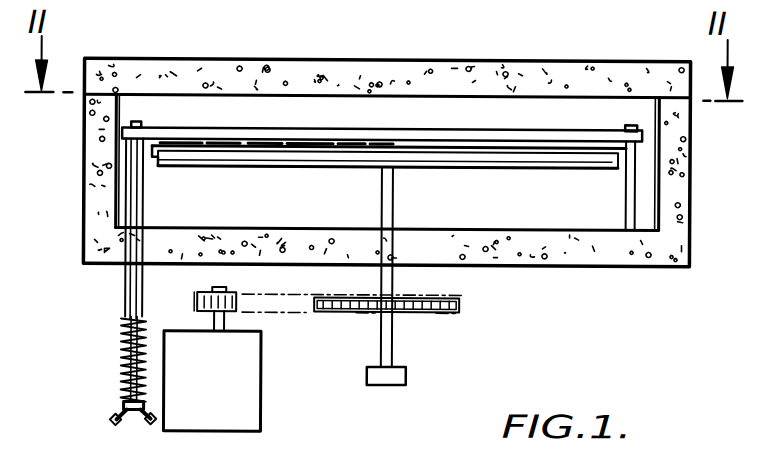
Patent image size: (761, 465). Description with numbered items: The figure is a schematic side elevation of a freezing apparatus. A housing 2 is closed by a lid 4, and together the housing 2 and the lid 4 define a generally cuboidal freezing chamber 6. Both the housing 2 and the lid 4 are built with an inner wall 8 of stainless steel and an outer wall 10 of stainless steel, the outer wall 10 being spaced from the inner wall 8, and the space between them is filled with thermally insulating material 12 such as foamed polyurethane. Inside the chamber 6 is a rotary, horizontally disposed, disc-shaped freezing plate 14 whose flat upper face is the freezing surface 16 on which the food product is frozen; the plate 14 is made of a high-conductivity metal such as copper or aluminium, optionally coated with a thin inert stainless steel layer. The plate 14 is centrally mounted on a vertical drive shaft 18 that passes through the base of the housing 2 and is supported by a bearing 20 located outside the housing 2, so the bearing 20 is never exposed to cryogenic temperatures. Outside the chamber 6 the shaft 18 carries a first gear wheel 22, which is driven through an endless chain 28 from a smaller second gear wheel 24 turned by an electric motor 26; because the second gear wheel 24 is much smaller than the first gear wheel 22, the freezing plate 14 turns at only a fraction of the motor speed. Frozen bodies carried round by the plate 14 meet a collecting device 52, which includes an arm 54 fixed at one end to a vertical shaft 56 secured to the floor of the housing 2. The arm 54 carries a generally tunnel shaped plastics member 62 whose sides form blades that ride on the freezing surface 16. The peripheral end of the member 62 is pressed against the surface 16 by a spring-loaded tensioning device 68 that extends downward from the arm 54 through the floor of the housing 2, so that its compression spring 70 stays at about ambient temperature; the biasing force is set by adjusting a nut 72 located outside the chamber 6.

The housing 2 is at (70, 140).
The lid 4 is at (283, 52).
The freezing chamber 6 is at (475, 198).
The inner wall 8 is at (214, 97).
The outer wall 10 is at (393, 62).
The thermally insulating material 12 is at (158, 77).
The freezing plate 14 is at (549, 185).
The freezing surface 16 is at (508, 158).
The drive shaft 18 is at (390, 347).
The bearing 20 is at (383, 378).
The first gear wheel 22 is at (430, 313).
The second gear wheel 24 is at (197, 303).
The electric motor 26 is at (220, 397).
The endless chain 28 is at (275, 313).
The collecting device 52 is at (355, 118).
The arm 54 is at (588, 137).
The vertical shaft 56 is at (627, 207).
The tunnel shaped member 62 is at (378, 150).
The spring-loaded tensioning device 68 is at (106, 389).
The compression spring 70 is at (127, 358).
The nut 72 is at (123, 413).